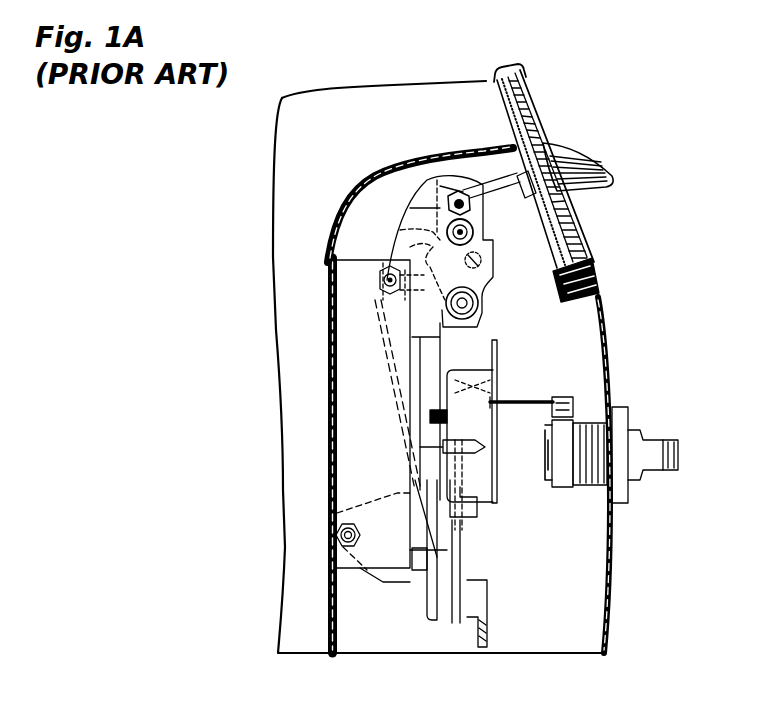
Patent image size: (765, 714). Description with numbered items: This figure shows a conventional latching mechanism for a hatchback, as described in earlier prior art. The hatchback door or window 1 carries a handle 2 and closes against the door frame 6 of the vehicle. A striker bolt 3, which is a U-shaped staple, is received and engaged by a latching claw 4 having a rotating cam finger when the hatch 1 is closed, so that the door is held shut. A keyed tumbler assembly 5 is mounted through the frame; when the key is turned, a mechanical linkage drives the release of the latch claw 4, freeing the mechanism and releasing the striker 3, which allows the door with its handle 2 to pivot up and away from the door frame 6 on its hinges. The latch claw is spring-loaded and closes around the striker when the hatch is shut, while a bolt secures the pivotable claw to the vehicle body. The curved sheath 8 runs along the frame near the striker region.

The hatchback door 1 is at (537, 104).
The handle 2 is at (588, 167).
The striker bolt 3 is at (495, 170).
The latching claw 4 is at (492, 222).
The keyed tumbler assembly 5 is at (657, 435).
The door frame 6 is at (368, 192).
The sheath 8 is at (475, 168).